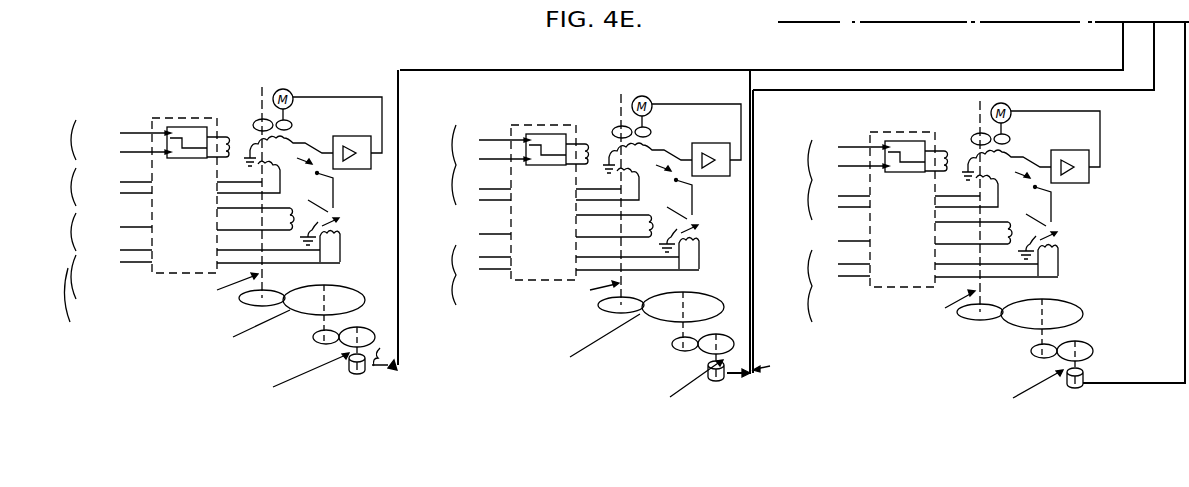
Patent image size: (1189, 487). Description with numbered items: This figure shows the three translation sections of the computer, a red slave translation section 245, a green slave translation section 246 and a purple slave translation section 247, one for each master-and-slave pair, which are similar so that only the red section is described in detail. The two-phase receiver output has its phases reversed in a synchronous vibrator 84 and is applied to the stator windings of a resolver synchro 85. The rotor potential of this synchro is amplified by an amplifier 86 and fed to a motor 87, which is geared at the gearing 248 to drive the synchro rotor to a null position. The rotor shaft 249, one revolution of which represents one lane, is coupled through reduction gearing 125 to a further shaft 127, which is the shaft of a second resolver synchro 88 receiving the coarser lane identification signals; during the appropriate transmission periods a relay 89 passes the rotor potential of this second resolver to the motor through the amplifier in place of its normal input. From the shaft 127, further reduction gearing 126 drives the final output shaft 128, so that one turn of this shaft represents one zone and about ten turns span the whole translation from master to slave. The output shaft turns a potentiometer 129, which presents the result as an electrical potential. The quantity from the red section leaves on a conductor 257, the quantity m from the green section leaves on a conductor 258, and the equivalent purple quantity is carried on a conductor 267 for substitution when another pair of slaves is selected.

The synchronous vibrator 84 is at (192, 272).
The resolver synchro 85 is at (241, 142).
The amplifier 86 is at (364, 136).
The motor 87 is at (292, 92).
The resolver synchro 88 is at (312, 209).
The relay 89 is at (275, 164).
The reduction gearing 125 is at (242, 322).
The reduction gearing 126 is at (374, 342).
The shaft 127 is at (363, 298).
The output shaft 128 is at (353, 327).
The potentiometer 129 is at (388, 369).
The red slave translation section 245 is at (127, 414).
The green slave translation section 246 is at (536, 421).
The purple slave translation section 247 is at (841, 431).
The gearing 248 is at (259, 181).
The rotor shaft 249 is at (260, 248).
The conductor 257 is at (610, 68).
The conductor 258 is at (757, 98).
The conductor 267 is at (1183, 137).
The quantity m is at (771, 366).